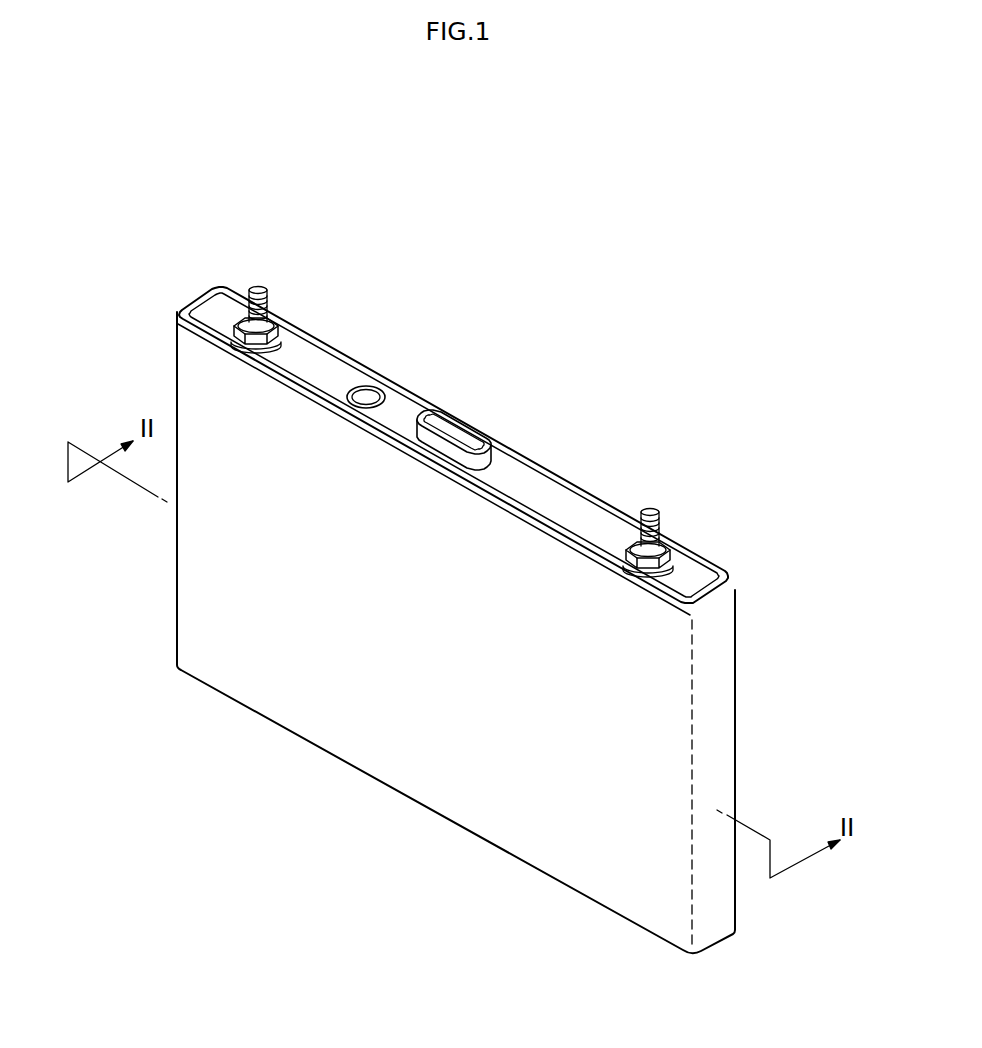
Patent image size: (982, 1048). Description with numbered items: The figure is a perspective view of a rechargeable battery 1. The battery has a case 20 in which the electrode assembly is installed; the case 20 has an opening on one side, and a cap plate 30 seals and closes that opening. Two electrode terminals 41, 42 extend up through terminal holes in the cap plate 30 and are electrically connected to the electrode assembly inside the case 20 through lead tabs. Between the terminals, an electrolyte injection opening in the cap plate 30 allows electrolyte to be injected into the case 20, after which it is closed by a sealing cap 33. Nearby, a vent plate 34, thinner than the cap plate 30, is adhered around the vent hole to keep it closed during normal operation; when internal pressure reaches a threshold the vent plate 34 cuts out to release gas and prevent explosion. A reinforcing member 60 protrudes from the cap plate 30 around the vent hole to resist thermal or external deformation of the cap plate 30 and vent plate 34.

The rechargeable battery 1 is at (608, 352).
The case 20 is at (435, 790).
The cap plate 30 is at (550, 498).
The sealing cap 33 is at (366, 395).
The vent plate 34 is at (442, 418).
The electrode terminal 41 is at (258, 290).
The electrode terminal 42 is at (647, 510).
The reinforcing member 60 is at (487, 423).